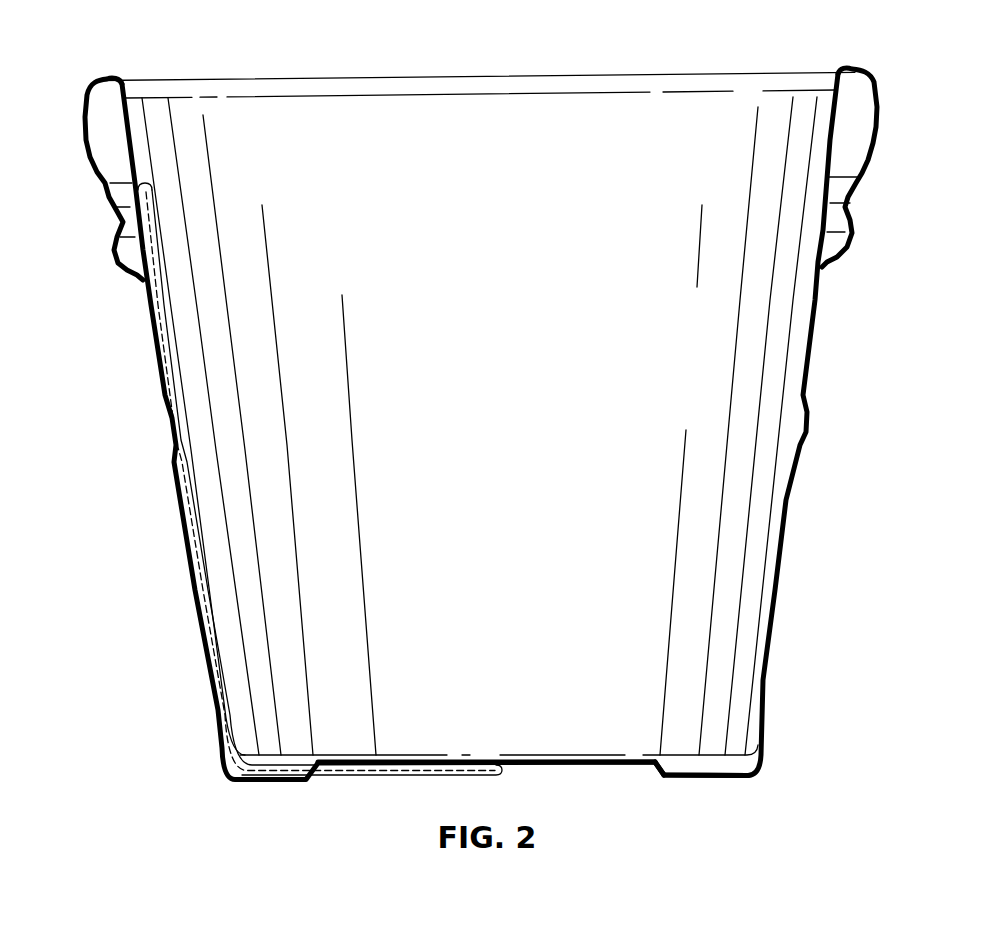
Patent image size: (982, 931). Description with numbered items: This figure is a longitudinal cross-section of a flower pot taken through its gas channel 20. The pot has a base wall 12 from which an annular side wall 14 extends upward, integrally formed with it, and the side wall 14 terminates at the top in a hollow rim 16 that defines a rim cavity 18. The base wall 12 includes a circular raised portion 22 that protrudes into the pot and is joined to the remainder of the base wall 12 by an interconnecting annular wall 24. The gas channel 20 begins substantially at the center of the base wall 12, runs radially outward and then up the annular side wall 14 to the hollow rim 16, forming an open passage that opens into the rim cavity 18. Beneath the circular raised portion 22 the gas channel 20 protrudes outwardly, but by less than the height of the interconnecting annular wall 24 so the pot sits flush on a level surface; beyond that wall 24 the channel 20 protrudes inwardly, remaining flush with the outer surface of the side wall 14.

The base wall 12 is at (703, 777).
The annular side wall 14 is at (810, 367).
The hollow rim 16 is at (877, 92).
The rim cavity 18 is at (860, 147).
The gas channel 20 is at (172, 408).
The circular raised portion 22 is at (523, 767).
The interconnecting annular wall 24 is at (658, 768).